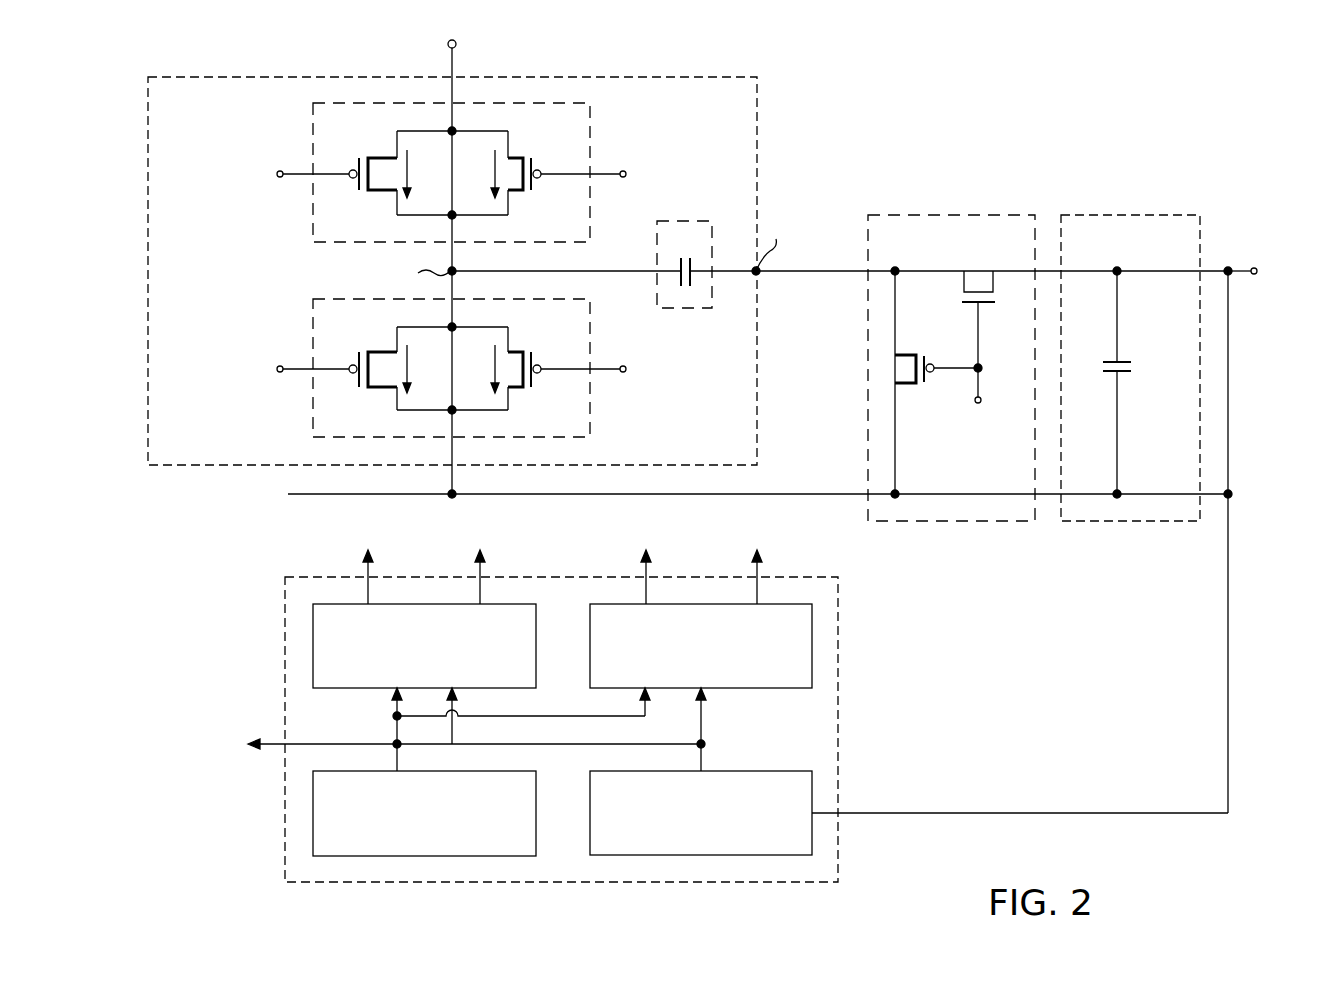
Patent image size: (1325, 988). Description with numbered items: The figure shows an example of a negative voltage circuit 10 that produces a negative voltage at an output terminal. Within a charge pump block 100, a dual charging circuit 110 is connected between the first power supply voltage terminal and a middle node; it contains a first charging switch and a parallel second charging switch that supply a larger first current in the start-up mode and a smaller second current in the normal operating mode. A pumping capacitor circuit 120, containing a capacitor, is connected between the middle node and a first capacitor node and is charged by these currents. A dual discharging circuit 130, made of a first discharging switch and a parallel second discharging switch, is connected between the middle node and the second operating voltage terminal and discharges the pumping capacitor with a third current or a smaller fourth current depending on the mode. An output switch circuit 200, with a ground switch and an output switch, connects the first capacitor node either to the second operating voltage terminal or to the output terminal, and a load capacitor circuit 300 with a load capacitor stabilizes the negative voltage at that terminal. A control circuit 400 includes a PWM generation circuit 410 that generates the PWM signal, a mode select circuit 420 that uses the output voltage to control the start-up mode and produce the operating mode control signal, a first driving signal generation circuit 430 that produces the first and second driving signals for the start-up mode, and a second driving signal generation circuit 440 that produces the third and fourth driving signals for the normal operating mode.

The negative voltage circuit 10 is at (874, 42).
The charge pump circuit 100 is at (541, 77).
The dual charging circuit 110 is at (313, 221).
The pumping capacitor circuit 120 is at (712, 300).
The dual discharging circuit 130 is at (313, 321).
The output switch circuit 200 is at (944, 215).
The load capacitor circuit 300 is at (1128, 215).
The control circuit 400 is at (838, 731).
The PWM generation circuit 410 is at (313, 814).
The mode select circuit 420 is at (812, 840).
The first driving signal generation circuit 430 is at (313, 648).
The second driving signal generation circuit 440 is at (812, 648).